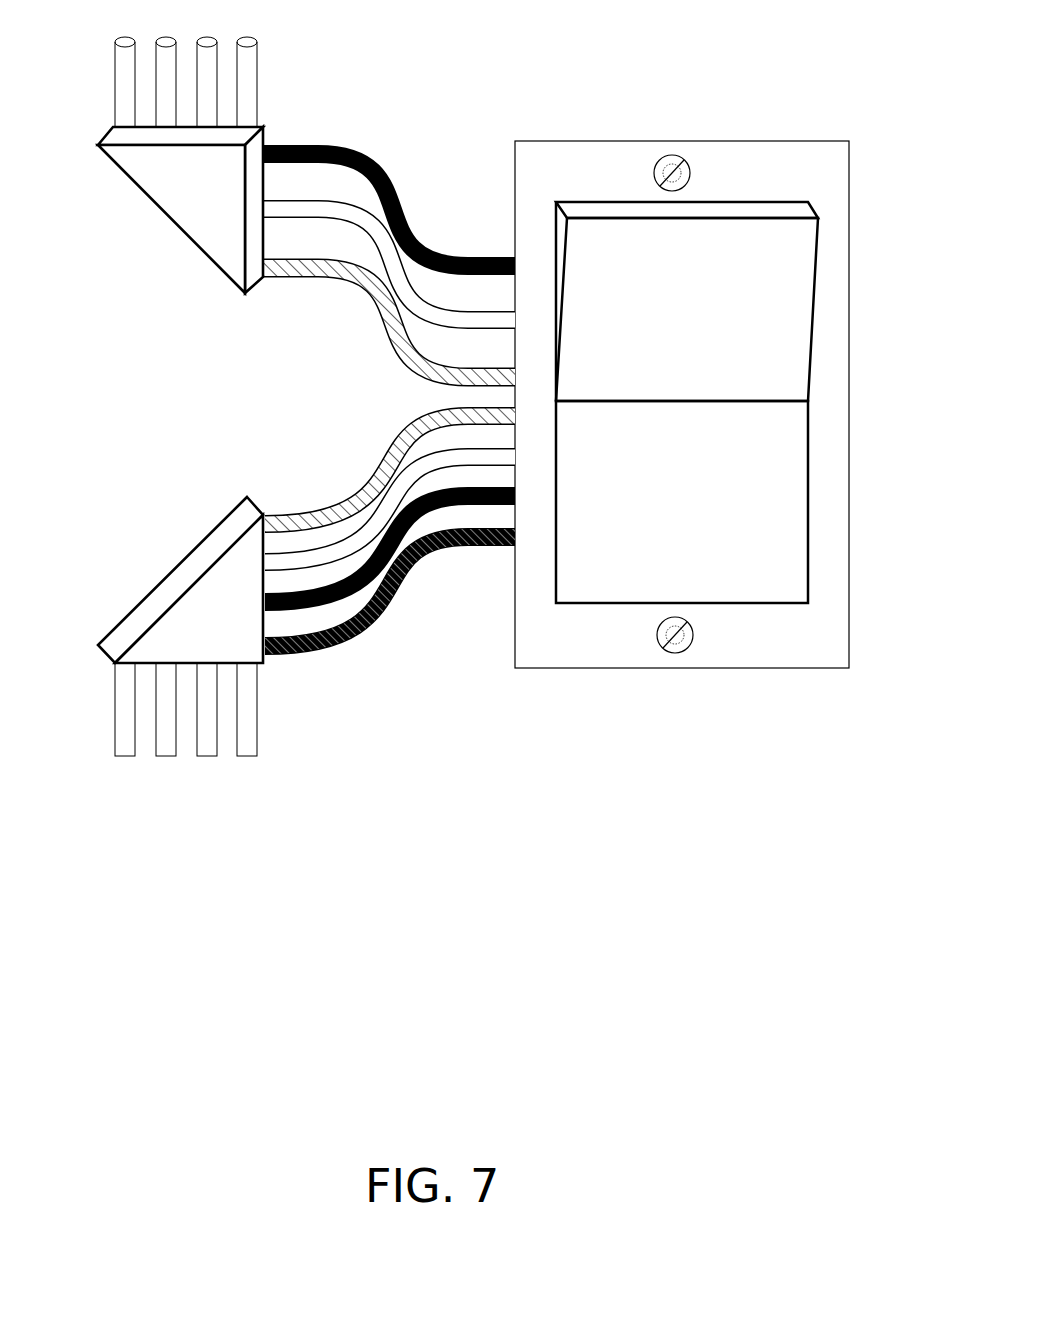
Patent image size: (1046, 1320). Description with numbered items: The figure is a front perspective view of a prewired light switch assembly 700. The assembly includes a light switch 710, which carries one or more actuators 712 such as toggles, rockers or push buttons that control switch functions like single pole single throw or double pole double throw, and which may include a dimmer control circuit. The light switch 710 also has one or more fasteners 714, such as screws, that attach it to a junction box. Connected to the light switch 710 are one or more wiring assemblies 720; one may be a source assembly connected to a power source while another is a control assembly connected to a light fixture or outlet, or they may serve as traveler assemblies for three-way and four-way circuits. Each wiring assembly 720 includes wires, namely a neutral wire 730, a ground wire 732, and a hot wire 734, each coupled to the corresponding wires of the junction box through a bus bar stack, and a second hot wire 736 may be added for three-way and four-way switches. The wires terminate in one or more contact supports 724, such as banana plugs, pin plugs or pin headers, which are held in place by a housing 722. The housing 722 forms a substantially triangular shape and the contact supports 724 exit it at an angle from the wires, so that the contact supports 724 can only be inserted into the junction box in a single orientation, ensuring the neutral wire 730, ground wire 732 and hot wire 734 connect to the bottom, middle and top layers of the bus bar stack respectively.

The prewired light switch assembly 700 is at (590, 915).
The light switch 710 is at (682, 461).
The actuator 712 is at (777, 328).
The fastener 714 is at (677, 168).
The wiring assembly 720 is at (200, 300).
The housing 722 is at (175, 580).
The contact support 724 is at (123, 738).
The neutral wire 730 is at (293, 530).
The ground wire 732 is at (356, 547).
The hot wire 734 is at (413, 517).
The second hot wire 736 is at (479, 547).